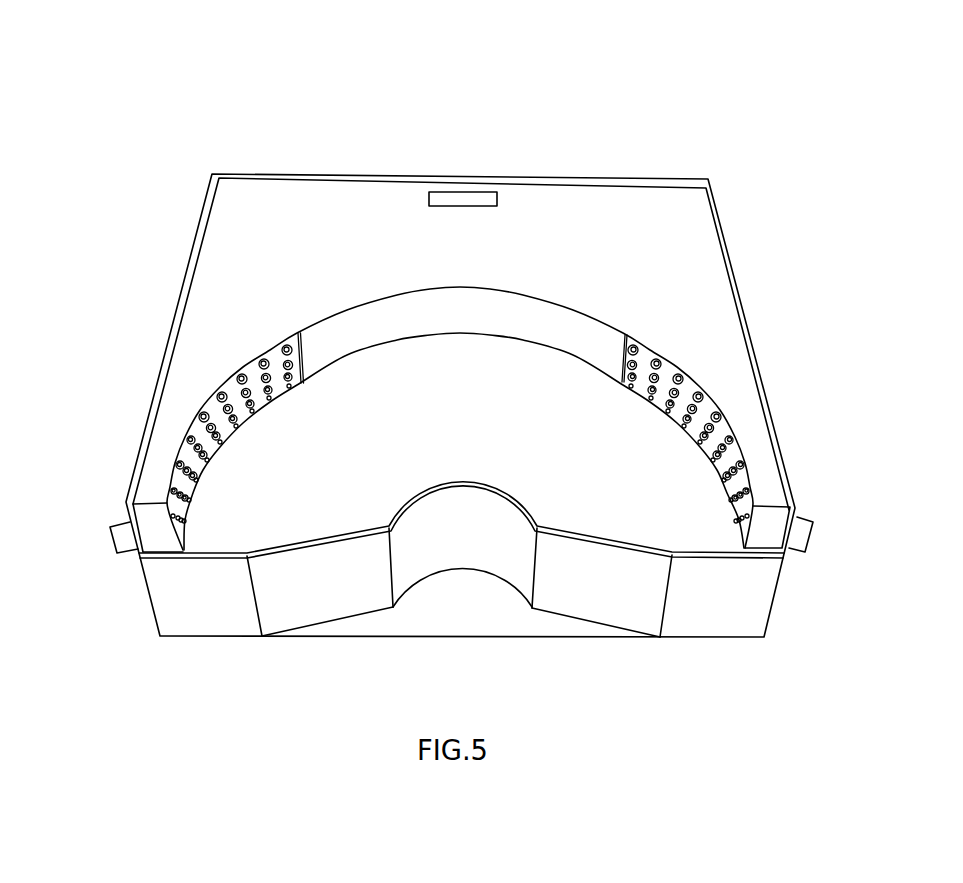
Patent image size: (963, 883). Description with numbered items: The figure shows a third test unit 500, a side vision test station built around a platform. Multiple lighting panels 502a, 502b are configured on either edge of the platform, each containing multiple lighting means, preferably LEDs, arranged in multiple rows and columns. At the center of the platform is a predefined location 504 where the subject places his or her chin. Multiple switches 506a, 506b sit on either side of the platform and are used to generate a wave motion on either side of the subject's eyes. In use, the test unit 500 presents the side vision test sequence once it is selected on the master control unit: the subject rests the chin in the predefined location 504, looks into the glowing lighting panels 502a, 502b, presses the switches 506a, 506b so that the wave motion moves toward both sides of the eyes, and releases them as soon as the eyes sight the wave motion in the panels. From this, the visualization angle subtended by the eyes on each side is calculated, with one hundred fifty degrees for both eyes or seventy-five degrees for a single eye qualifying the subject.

The third test unit 500 is at (194, 52).
The lighting panel 502a is at (651, 355).
The lighting panel 502b is at (277, 352).
The predefined location 504 is at (498, 486).
The switch 506a is at (799, 533).
The switch 506b is at (113, 539).